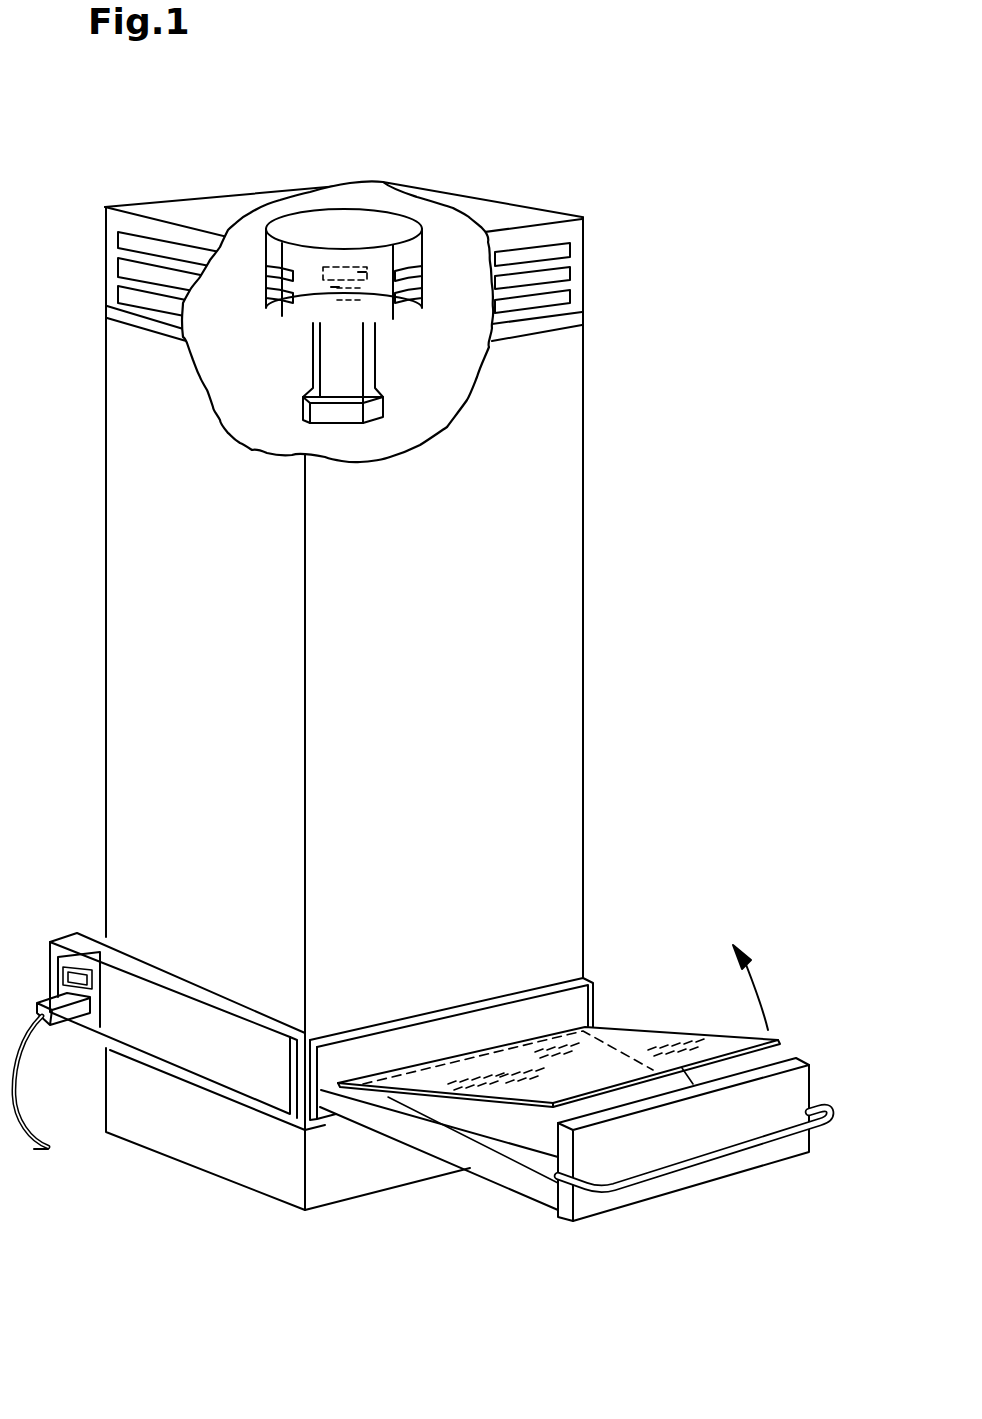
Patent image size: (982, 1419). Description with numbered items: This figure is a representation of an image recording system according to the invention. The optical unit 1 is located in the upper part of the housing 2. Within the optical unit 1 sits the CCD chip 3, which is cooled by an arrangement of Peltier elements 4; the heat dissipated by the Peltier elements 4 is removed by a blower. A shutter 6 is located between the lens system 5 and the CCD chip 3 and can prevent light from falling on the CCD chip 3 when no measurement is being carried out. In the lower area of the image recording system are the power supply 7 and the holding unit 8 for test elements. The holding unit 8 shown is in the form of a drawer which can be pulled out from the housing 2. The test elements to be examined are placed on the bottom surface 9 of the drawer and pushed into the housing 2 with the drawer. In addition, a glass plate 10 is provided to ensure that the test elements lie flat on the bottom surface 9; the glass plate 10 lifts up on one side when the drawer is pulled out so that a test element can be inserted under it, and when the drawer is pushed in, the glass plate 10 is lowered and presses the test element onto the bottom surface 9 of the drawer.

The optical unit 1 is at (350, 226).
The housing 2 is at (530, 594).
The CCD chip 3 is at (333, 288).
The Peltier elements 4 is at (363, 274).
The lens system 5 is at (376, 368).
The shutter 6 is at (320, 302).
The power supply 7 is at (78, 950).
The holding unit 8 is at (600, 1102).
The bottom surface 9 is at (470, 1170).
The glass plate 10 is at (628, 1043).